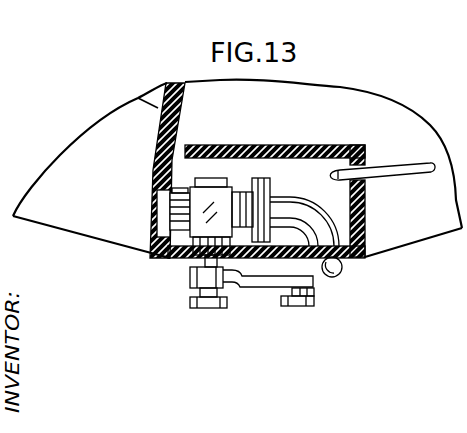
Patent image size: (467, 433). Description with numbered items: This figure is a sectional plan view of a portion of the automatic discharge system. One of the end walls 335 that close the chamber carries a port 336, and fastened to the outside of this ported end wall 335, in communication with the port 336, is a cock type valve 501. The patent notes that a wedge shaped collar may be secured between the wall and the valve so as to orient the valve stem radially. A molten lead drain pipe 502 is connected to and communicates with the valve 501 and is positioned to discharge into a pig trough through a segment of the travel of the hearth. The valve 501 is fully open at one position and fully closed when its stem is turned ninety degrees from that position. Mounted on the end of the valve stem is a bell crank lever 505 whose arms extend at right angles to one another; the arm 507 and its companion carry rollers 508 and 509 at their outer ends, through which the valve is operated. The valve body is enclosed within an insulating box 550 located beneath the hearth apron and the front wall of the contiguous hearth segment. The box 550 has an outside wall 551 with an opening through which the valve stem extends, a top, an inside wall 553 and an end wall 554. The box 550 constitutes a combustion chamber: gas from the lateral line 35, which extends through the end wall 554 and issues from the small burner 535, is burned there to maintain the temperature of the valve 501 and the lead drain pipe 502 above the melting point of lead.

The lateral line 35 is at (399, 163).
The end wall 335 is at (138, 97).
The port 336 is at (151, 219).
The cock type valve 501 is at (208, 194).
The molten lead drain pipe 502 is at (345, 268).
The bell crank lever 505 is at (267, 290).
The arm 507 is at (190, 277).
The roller 508 is at (316, 302).
The roller 509 is at (216, 309).
The small burner 535 is at (355, 146).
The insulating box 550 is at (299, 144).
The outside wall 551 is at (178, 263).
The inside wall 553 is at (263, 144).
The end wall 554 is at (367, 220).